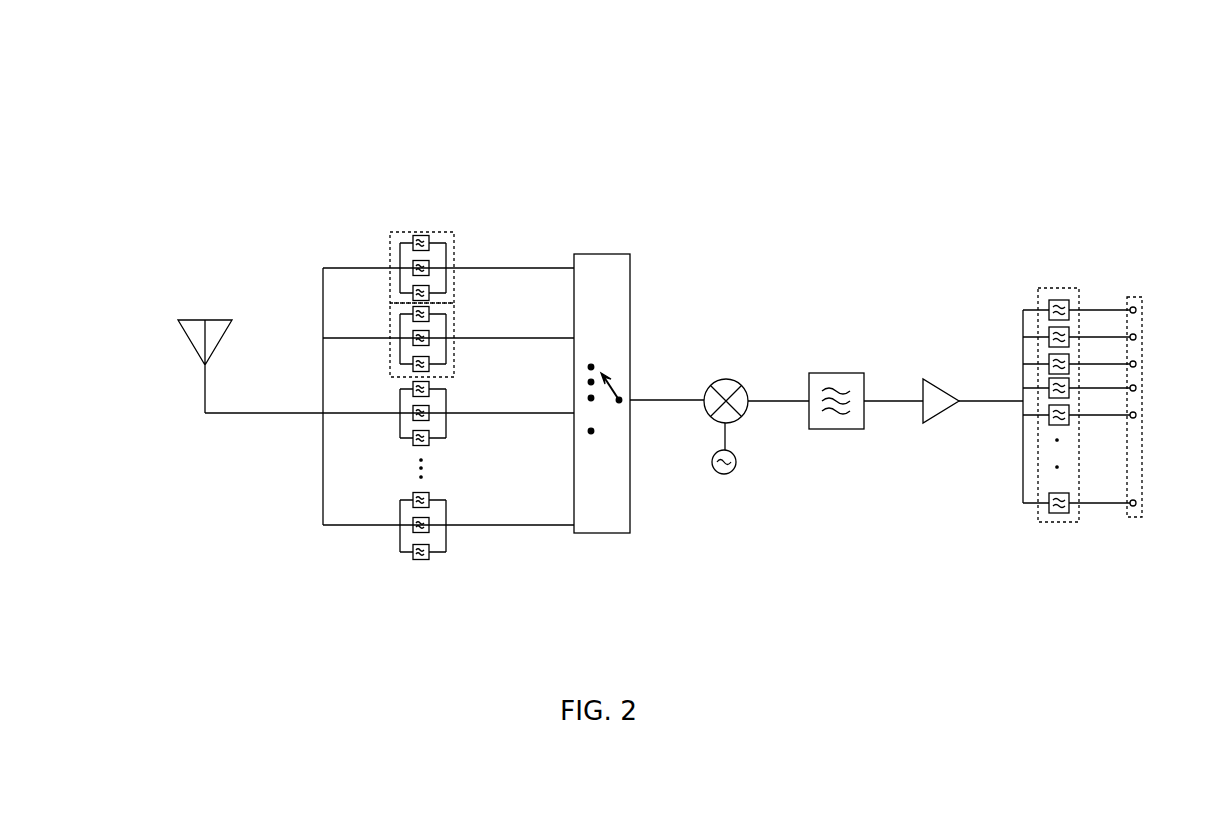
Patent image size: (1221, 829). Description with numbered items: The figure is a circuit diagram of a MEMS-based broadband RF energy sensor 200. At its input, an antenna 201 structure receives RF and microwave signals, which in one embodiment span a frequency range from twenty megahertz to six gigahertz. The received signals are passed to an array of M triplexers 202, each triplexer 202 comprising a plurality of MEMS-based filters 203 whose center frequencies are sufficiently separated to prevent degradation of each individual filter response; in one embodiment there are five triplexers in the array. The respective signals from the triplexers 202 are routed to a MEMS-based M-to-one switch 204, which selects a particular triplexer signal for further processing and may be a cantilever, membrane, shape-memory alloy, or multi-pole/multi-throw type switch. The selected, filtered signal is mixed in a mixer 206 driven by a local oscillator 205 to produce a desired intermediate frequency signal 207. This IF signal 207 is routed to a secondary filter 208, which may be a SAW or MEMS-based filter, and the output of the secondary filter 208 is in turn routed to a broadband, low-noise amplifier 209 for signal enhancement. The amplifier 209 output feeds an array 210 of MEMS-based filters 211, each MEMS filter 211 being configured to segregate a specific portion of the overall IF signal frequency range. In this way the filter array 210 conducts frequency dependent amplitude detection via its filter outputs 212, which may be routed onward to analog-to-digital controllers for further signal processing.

The MEMS-based broadband RF energy sensor 200 is at (178, 127).
The antenna 201 is at (190, 347).
The triplexer 202 is at (455, 283).
The MEMS-based filter 203 is at (455, 442).
The MEMS-based M:1 switch 204 is at (600, 254).
The local oscillator 205 is at (724, 474).
The mixer 206 is at (723, 379).
The intermediate frequency (IF) signal 207 is at (780, 400).
The secondary filter 208 is at (832, 373).
The broadband, low-noise amplifier 209 is at (938, 388).
The filter array 210 is at (1058, 288).
The MEMS-based filter 211 is at (1049, 496).
The filter output 212 is at (1143, 453).